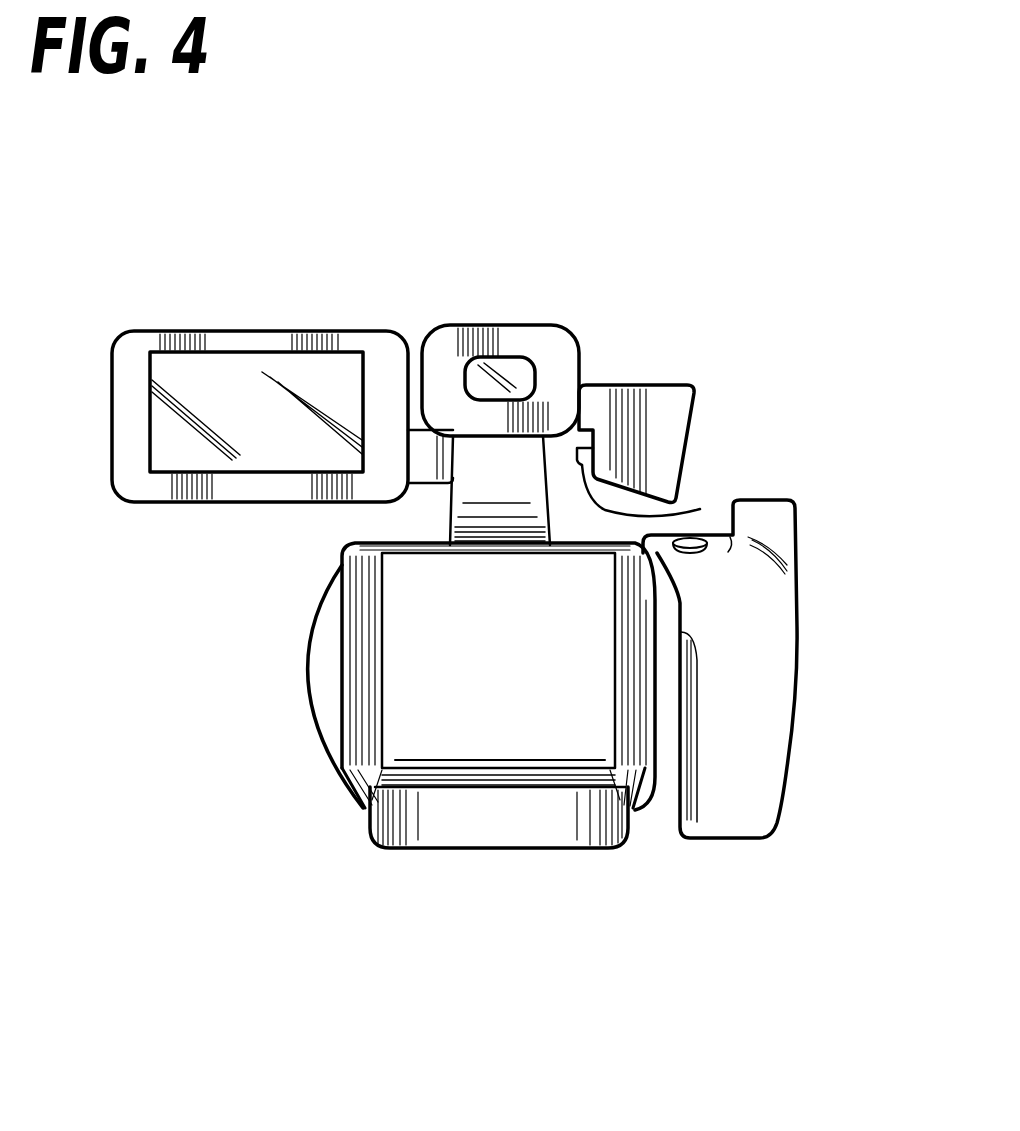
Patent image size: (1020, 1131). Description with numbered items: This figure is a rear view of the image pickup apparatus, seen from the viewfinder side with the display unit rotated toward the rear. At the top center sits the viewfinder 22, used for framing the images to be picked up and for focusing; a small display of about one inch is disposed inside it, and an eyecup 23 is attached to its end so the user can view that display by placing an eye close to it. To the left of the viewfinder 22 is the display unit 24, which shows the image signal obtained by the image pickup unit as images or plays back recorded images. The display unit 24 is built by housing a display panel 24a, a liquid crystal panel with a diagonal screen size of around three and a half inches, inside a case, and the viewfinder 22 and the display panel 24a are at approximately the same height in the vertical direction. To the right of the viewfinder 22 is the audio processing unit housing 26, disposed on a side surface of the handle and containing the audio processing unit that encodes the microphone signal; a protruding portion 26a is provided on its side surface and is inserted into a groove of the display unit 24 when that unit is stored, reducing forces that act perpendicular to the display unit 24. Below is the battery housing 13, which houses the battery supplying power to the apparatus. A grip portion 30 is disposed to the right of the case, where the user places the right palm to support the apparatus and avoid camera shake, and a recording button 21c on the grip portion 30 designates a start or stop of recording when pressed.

The battery housing 13 is at (497, 753).
The recording button 21c is at (693, 537).
The viewfinder 22 is at (522, 375).
The eyecup 23 is at (517, 332).
The display unit 24 is at (115, 353).
The display panel 24a is at (220, 367).
The audio processing unit housing 26 is at (697, 420).
The protruding portion 26a is at (700, 509).
The grip portion 30 is at (793, 747).